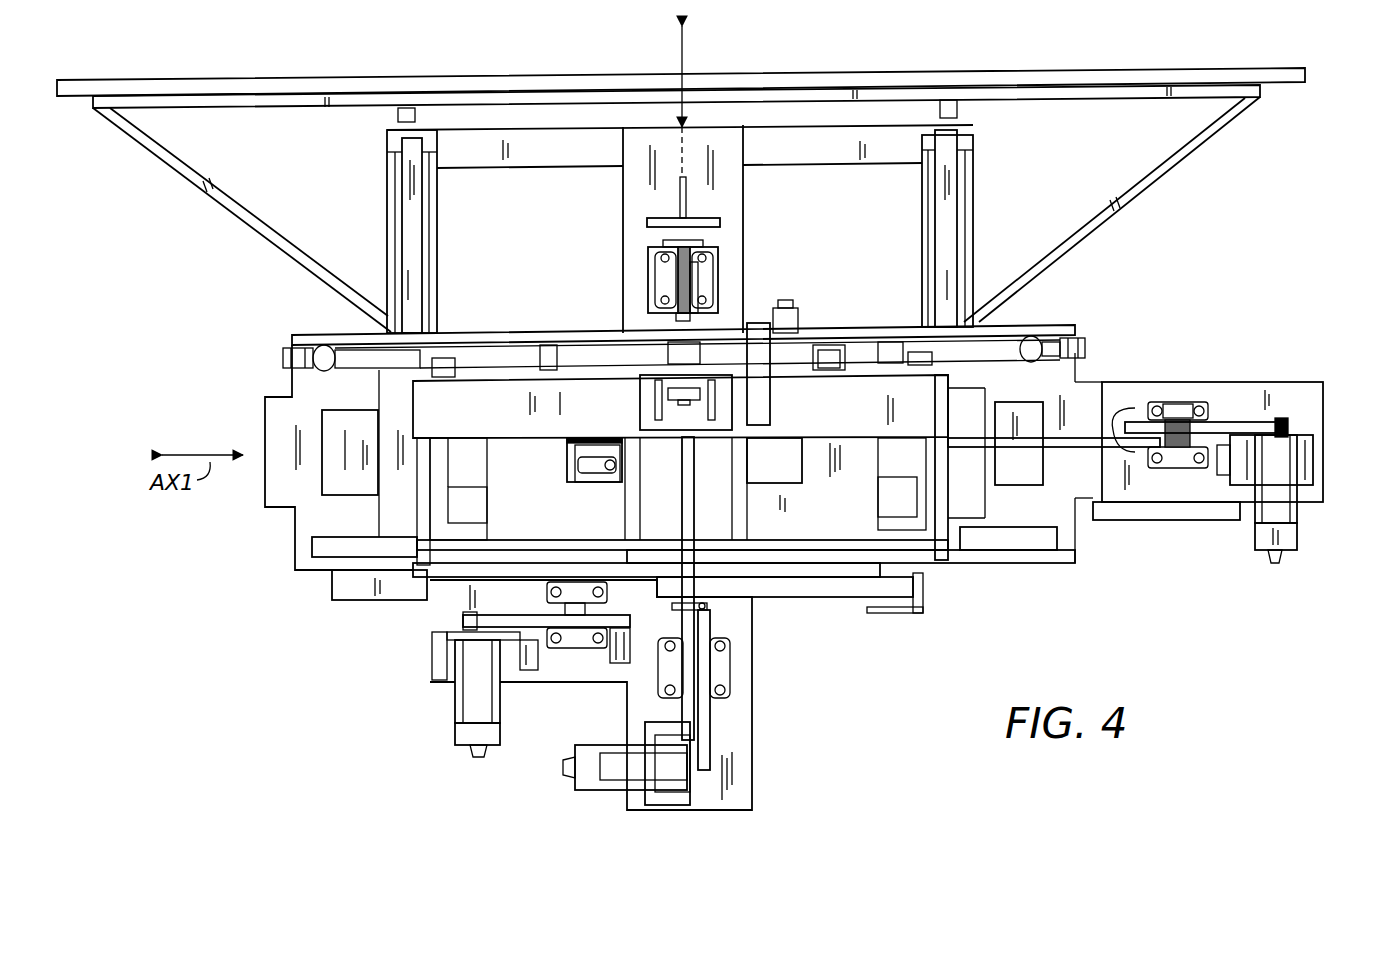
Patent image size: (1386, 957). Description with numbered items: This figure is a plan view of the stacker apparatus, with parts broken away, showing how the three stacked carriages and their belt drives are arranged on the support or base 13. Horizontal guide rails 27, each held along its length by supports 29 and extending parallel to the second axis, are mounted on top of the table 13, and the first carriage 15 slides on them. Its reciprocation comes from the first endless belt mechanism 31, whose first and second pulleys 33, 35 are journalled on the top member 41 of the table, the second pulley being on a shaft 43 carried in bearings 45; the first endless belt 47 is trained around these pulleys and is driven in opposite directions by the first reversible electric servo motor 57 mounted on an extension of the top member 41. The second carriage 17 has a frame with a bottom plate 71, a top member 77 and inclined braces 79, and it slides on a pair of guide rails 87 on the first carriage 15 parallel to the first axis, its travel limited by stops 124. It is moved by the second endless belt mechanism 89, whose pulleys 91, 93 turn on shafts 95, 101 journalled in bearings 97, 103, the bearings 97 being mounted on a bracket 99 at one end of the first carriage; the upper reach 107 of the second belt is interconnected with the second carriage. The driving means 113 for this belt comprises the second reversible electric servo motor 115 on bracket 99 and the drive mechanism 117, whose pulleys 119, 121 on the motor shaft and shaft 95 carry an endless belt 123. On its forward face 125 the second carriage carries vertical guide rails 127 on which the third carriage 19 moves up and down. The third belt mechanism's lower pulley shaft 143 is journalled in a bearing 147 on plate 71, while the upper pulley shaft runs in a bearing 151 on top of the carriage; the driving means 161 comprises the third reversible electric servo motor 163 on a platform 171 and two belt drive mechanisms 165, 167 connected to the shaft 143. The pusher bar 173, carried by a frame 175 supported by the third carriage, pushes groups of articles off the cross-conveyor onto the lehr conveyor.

The support or base 13 is at (973, 142).
The first carriage 15 is at (333, 603).
The second carriage 17 is at (410, 510).
The third carriage 19 is at (237, 228).
The guide rails 27 is at (412, 277).
The supports 29 is at (437, 220).
The first endless belt mechanism 31 is at (735, 720).
The first pulley 33 is at (728, 665).
The second pulley 35 is at (713, 277).
The top member 41 is at (745, 212).
The shaft 43 is at (672, 273).
The bearings 45 is at (657, 248).
The first endless belt 47 is at (672, 322).
The first reversible electric servo motor 57 is at (583, 790).
The bottom or base plate 71 is at (970, 505).
The top member 77 is at (427, 410).
The inclined braces 79 is at (420, 475).
The guide rails 87 is at (357, 363).
The second endless belt mechanism 89 is at (1075, 425).
The first pulley 91 is at (1173, 457).
The second pulley 93 is at (608, 422).
The shaft 95 is at (1208, 421).
The bearings 97 is at (1160, 403).
The bracket 99 is at (1313, 427).
The shaft 101 is at (592, 473).
The bearings 103 is at (570, 467).
The upper horizontal reach 107 is at (760, 447).
The means for driving the second endless belt 113 is at (1307, 398).
The second reversible electric servo motor 115 is at (1298, 543).
The endless belt drive mechanism 117 is at (1223, 378).
The pulley 119 is at (1283, 414).
The pulley 121 is at (1113, 458).
The endless belt 123 is at (1237, 425).
The stops 124 is at (322, 333).
The forward or front face 125 is at (505, 332).
The guide rails 127 is at (447, 367).
The shaft 143 is at (682, 493).
The bearing 147 is at (690, 565).
The bearing 151 is at (722, 408).
The means for driving the third endless belt 161 is at (585, 670).
The third reversible electric servo motor 163 is at (457, 748).
The endless belt drive mechanism 165 is at (447, 623).
The endless belt drive mechanism 167 is at (712, 607).
The platform 171 is at (427, 682).
The pusher bar 173 is at (1044, 62).
The frame 175 is at (352, 112).